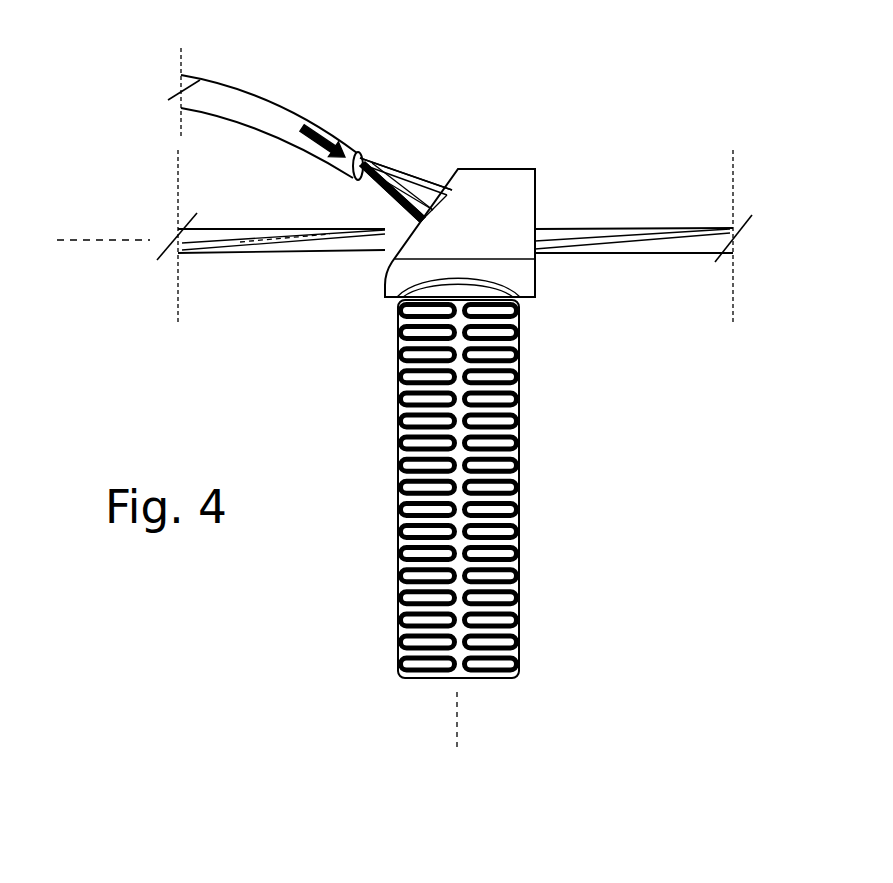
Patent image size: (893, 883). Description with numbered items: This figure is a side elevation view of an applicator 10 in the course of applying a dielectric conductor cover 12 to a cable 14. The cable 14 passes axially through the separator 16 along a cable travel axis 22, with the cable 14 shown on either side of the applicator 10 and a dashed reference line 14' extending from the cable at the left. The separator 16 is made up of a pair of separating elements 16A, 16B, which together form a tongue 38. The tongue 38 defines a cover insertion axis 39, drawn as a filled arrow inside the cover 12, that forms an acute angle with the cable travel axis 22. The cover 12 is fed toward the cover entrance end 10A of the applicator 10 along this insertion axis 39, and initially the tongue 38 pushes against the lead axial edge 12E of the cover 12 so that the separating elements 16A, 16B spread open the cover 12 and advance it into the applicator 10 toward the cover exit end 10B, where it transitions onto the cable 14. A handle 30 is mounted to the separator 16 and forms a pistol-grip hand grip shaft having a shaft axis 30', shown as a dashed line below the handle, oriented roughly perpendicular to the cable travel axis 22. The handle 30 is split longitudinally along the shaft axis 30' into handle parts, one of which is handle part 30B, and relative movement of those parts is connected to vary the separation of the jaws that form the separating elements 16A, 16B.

The applicator 10 is at (531, 150).
The cover entrance end 10A is at (364, 193).
The cover exit end 10B is at (547, 197).
The dielectric conductor cover 12 is at (275, 98).
The lead axial edge 12E is at (387, 174).
The cable 14 is at (454, 236).
The rod axis 14' is at (103, 209).
The separator 16 is at (408, 158).
The first separating element 16A is at (453, 172).
The second separating element 16B is at (407, 190).
The cable travel axis 22 is at (288, 247).
The handle 30 is at (424, 489).
The handle part 30B is at (398, 527).
The shaft axis 30' is at (389, 722).
The tongue 38 is at (432, 174).
The cover insertion axis 39 is at (327, 126).